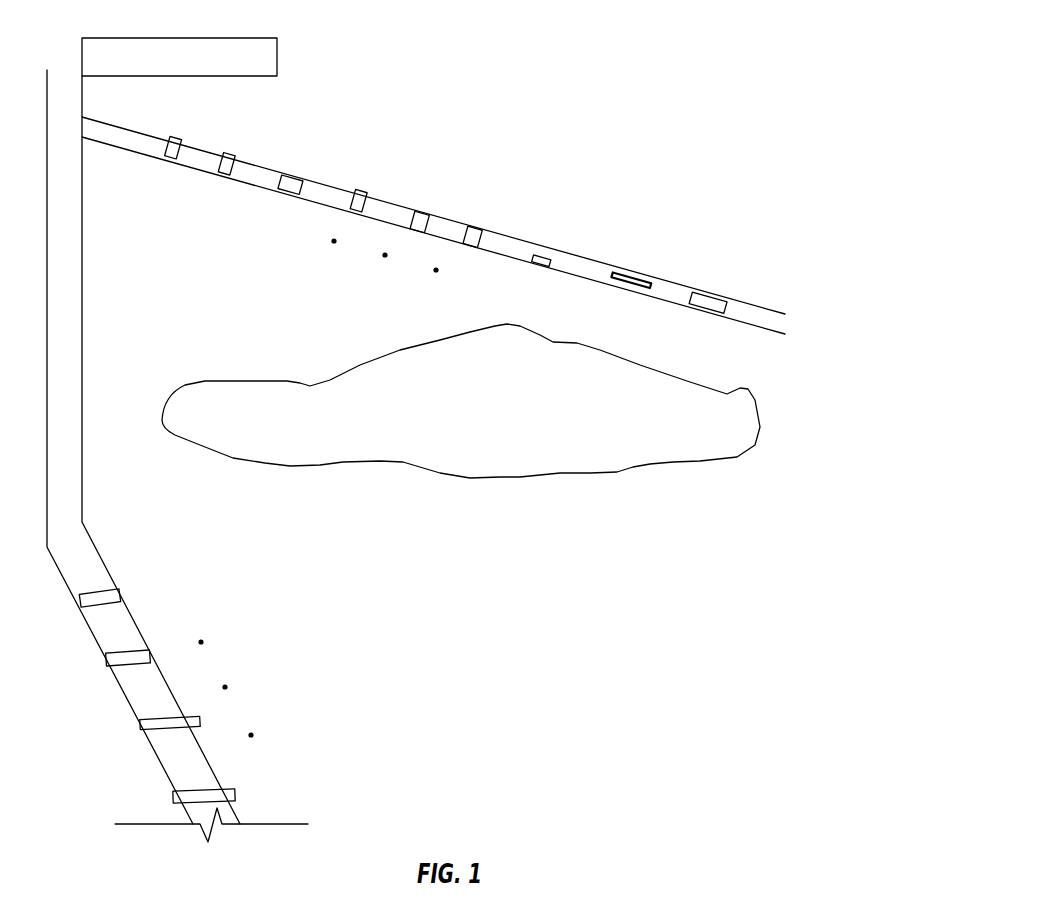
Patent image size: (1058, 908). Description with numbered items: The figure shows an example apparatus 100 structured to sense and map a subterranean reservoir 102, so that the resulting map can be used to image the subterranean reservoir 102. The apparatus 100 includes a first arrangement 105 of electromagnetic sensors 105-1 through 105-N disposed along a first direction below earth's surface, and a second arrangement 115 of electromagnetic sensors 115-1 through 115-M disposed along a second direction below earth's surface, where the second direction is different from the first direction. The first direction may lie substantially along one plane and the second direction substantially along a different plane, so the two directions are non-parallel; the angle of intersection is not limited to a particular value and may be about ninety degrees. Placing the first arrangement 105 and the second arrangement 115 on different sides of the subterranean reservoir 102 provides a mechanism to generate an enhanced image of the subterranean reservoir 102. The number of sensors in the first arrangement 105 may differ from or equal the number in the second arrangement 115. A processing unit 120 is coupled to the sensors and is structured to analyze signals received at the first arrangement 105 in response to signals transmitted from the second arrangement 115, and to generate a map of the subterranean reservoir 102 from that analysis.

The apparatus 100 is at (673, 38).
The processing unit 120 is at (215, 38).
The first arrangement 105 is at (678, 246).
The electromagnetic sensor 105-1 is at (176, 158).
The electromagnetic sensor 105-N is at (708, 310).
The subterranean reservoir 102 is at (672, 456).
The second arrangement 115 is at (126, 762).
The electromagnetic sensor 115-1 is at (122, 597).
The electromagnetic sensor 115-M is at (236, 794).